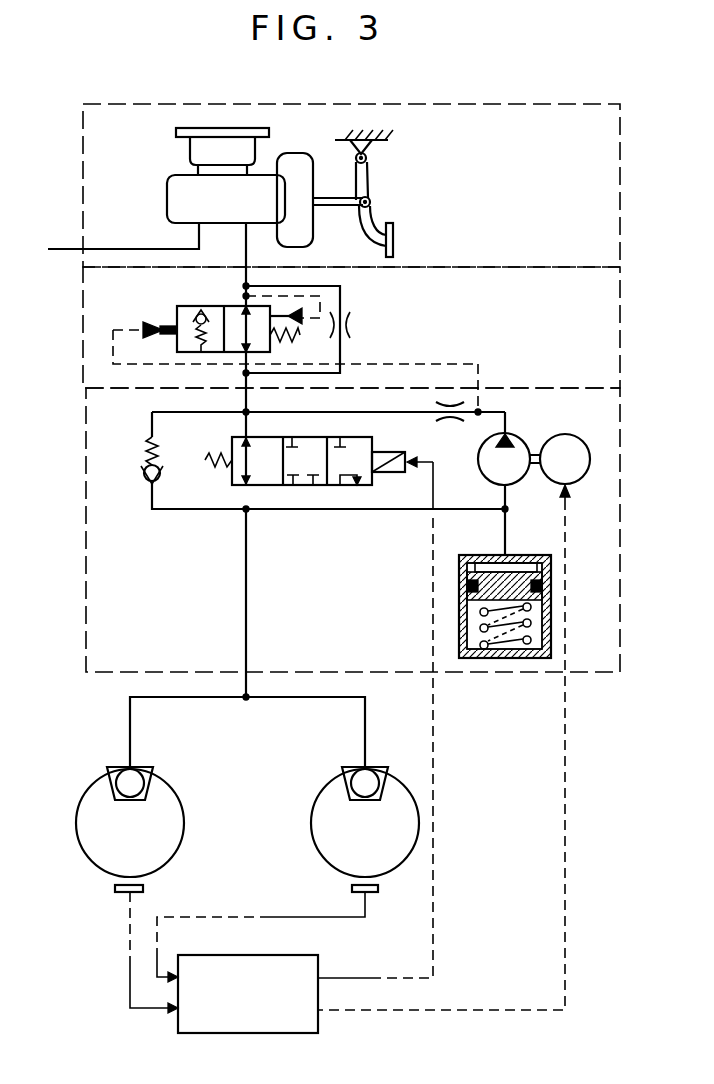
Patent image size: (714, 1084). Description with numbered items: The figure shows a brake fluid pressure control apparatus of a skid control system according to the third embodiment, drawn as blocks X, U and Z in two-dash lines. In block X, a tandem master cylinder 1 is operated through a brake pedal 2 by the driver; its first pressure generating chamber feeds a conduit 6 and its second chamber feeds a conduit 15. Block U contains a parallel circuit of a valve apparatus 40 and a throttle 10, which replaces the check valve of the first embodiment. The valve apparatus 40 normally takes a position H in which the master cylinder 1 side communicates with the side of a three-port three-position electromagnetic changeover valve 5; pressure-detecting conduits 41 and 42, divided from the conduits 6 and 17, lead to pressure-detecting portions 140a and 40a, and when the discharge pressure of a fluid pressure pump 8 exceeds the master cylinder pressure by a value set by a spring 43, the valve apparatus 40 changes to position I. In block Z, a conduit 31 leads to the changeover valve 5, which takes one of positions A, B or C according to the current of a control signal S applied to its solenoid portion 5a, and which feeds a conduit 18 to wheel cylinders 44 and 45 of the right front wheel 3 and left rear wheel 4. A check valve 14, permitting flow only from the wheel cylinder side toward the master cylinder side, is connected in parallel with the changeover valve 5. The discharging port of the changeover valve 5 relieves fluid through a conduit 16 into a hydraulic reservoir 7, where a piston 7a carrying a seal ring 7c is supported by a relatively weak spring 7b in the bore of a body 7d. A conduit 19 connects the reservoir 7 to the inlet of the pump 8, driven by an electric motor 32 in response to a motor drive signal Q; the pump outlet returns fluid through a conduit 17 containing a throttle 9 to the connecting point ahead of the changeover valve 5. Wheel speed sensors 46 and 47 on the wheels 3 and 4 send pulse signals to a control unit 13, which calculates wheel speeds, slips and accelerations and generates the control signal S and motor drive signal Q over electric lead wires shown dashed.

The tandem master cylinder 1 is at (175, 192).
The brake pedal 2 is at (395, 231).
The right front wheel 3 is at (178, 822).
The left rear wheel 4 is at (323, 822).
The three-port three-position electromagnetic changeover valve 5 is at (224, 447).
The solenoid portion 5a is at (388, 473).
The conduit 6 is at (246, 237).
The hydraulic reservoir 7 is at (530, 611).
The piston 7a is at (480, 557).
The spring 7b is at (530, 622).
The seal ring 7c is at (545, 588).
The body 7d is at (504, 656).
The fluid pressure pump 8 is at (513, 446).
The throttle 9 is at (450, 421).
The throttle 10 is at (347, 322).
The control unit 13 is at (243, 955).
The check valve 14 is at (148, 466).
The conduit 15 is at (112, 243).
The conduit 16 is at (397, 511).
The conduit 17 is at (387, 413).
The conduit 18 is at (246, 630).
The conduit 19 is at (507, 498).
The conduit 31 is at (246, 398).
The electric motor 32 is at (570, 437).
The valve apparatus 40 is at (175, 303).
The pressure-detecting portion 40a is at (143, 328).
The pressure-detecting conduit 41 is at (322, 296).
The pressure-detecting conduit 42 is at (454, 371).
The spring 43 is at (285, 335).
The wheel cylinder 44 is at (137, 775).
The wheel cylinder 45 is at (372, 775).
The wheel speed sensor 46 is at (145, 888).
The wheel speed sensor 47 is at (380, 888).
The pressure-detecting portion 140a is at (302, 314).
The block X is at (620, 197).
The block U is at (620, 325).
The block Z is at (620, 537).
The control signal S is at (434, 868).
The motor drive signal Q is at (564, 885).
The position A is at (262, 487).
The position B is at (304, 487).
The position C is at (349, 487).
The position H is at (232, 352).
The position I is at (188, 352).